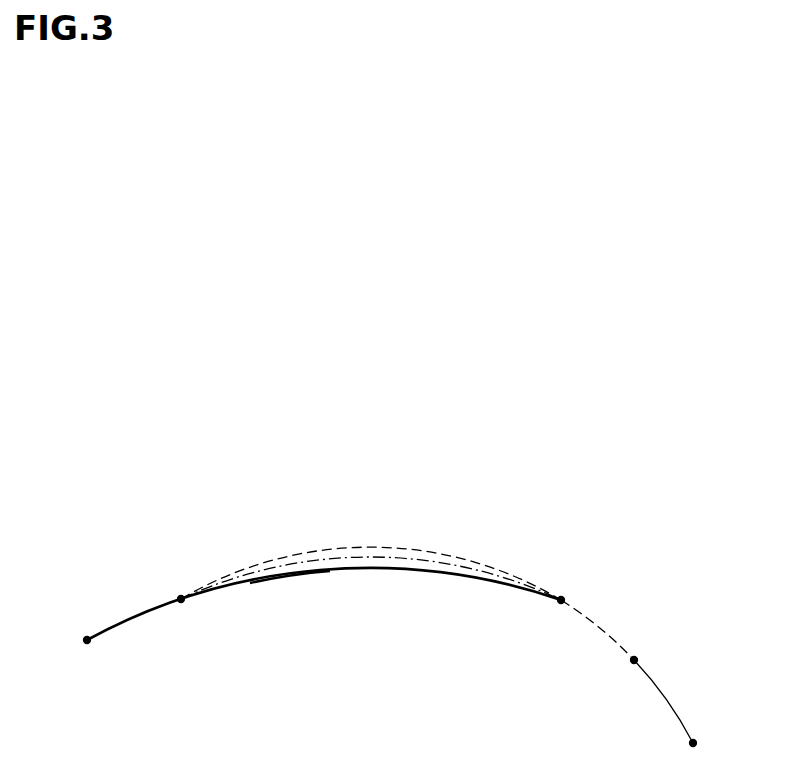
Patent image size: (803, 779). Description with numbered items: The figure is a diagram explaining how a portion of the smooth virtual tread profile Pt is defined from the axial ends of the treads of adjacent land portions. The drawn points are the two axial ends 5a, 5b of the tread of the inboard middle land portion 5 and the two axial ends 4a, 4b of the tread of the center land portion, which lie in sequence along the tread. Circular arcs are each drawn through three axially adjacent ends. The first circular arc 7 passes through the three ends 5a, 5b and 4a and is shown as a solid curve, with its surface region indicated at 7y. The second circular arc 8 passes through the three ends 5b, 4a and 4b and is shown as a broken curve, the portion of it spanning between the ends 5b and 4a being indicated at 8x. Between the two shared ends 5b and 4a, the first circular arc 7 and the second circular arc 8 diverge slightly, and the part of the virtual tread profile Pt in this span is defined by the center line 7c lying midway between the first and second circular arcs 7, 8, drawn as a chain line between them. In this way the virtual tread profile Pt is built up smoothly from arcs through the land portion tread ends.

The land portion 5 is at (693, 743).
The axial end of tread of inboard middle land portion 5a is at (87, 640).
The axial end of tread of inboard middle land portion 5b is at (181, 599).
The first circular arc 7 is at (137, 615).
The blade curved portion surface 7y is at (290, 572).
The center line 7c is at (363, 557).
The second circular arc 8 is at (598, 627).
The circumscribed circle arc 8x is at (420, 547).
The axial end of tread of center land portion 4a is at (561, 600).
The axial end of tread of center land portion 4b is at (634, 660).